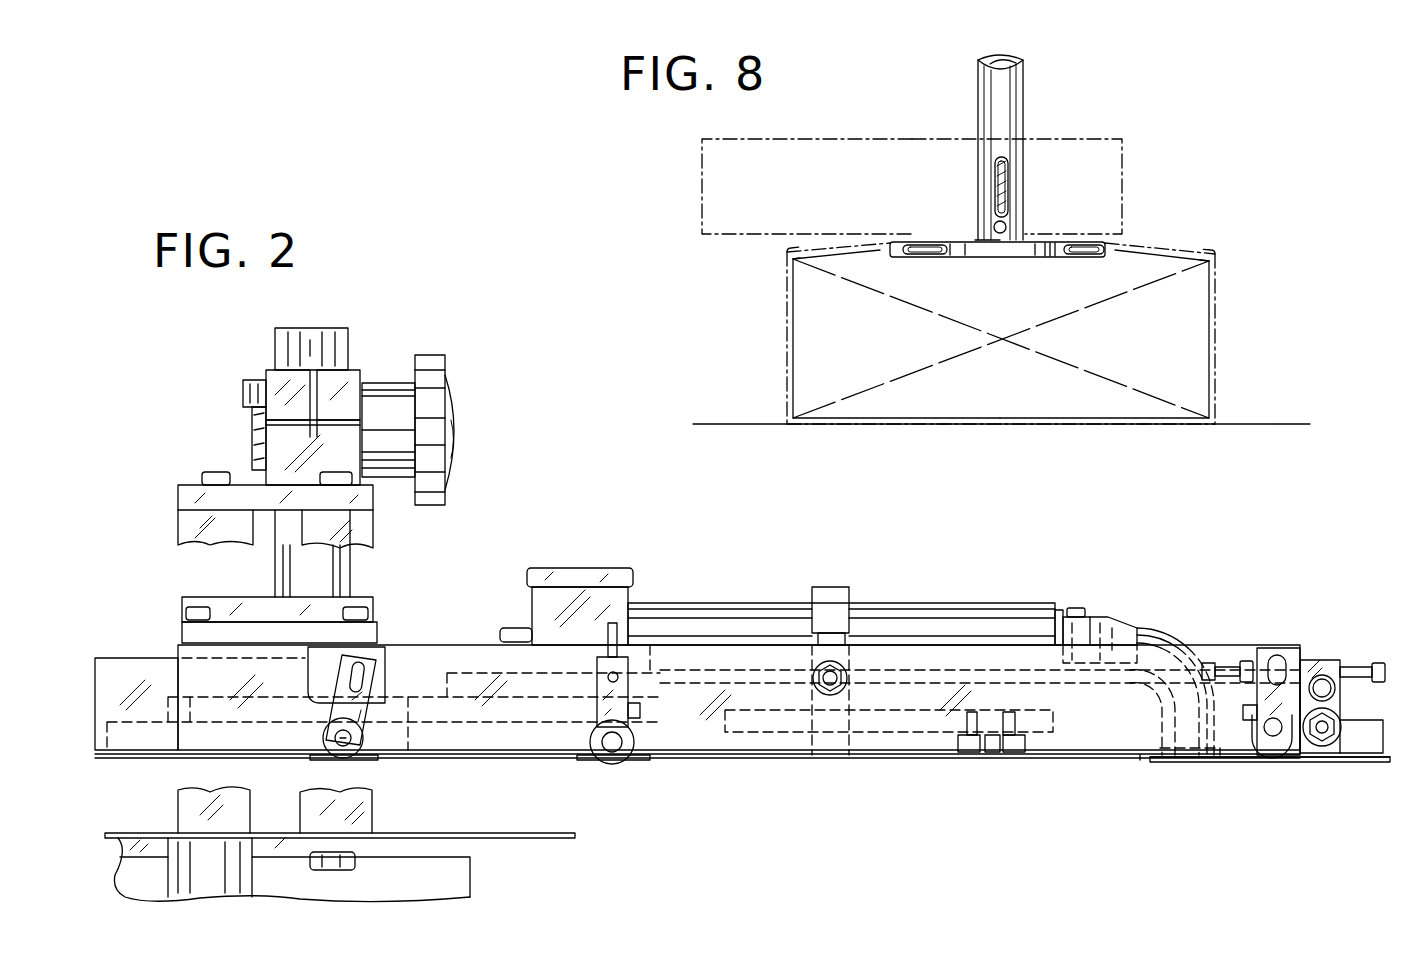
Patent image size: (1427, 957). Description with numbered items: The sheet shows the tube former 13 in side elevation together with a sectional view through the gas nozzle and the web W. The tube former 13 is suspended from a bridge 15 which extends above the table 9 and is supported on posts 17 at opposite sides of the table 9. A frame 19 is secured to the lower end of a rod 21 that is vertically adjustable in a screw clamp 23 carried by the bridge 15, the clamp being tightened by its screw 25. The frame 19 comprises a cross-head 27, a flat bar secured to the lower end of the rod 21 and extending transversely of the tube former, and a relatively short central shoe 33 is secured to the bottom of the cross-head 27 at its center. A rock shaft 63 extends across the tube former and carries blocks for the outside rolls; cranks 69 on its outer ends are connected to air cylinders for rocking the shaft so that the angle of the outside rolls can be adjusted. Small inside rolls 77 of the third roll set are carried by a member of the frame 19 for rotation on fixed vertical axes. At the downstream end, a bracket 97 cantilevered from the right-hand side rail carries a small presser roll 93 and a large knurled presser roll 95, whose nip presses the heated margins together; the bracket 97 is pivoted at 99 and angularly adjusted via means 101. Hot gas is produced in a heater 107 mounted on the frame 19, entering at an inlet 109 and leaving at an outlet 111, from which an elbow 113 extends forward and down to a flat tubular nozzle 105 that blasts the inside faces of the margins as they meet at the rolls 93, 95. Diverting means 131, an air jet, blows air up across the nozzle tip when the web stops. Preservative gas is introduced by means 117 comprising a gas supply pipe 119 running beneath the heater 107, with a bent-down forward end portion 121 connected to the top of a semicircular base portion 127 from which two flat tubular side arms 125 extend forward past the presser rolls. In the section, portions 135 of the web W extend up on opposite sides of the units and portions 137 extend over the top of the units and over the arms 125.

In FIG. 8, the table 9 is at (712, 422).
In FIG. 2, the table 9 is at (116, 835).
In FIG. 2, the tube former 13 is at (793, 525).
In FIG. 2, the bridge 15 is at (178, 496).
In FIG. 2, the posts 17 is at (178, 530).
In FIG. 2, the frame 19 is at (178, 650).
In FIG. 2, the rod 21 is at (293, 556).
In FIG. 2, the screw clamp 23 is at (266, 378).
In FIG. 2, the screw 25 is at (460, 432).
In FIG. 2, the cross-head 27 is at (182, 610).
In FIG. 2, the central shoe 33 is at (168, 700).
In FIG. 2, the rock shaft 63 is at (333, 755).
In FIG. 2, the cranks 69 is at (388, 693).
In FIG. 2, the inside rolls 77 is at (962, 742).
In FIG. 8, the roll 93 is at (1122, 200).
In FIG. 8, the roll 95 is at (702, 190).
In FIG. 2, the bracket 97 is at (1345, 696).
In FIG. 2, the pivot 99 is at (1275, 734).
In FIG. 2, the adjusting means 101 is at (1263, 652).
In FIG. 8, the nozzle 105 is at (995, 184).
In FIG. 2, the heater 107 is at (905, 603).
In FIG. 2, the inlet 109 is at (515, 630).
In FIG. 2, the outlet 111 is at (1110, 618).
In FIG. 8, the elbow 113 is at (1023, 92).
In FIG. 2, the elbow 113 is at (1168, 642).
In FIG. 2, the gas introducing means 117 is at (1150, 720).
In FIG. 2, the gas supply pipe 119 is at (697, 683).
In FIG. 2, the bent-down forward end portion 121 is at (1150, 718).
In FIG. 8, the side arms 125 is at (910, 256).
In FIG. 8, the base portion 127 is at (992, 259).
In FIG. 8, the diverting means 131 is at (975, 230).
In FIG. 2, the diverting means 131 is at (1222, 761).
In FIG. 8, the web portions 135 is at (787, 323).
In FIG. 8, the web portions 137 is at (858, 266).
In FIG. 8, the web W is at (958, 425).